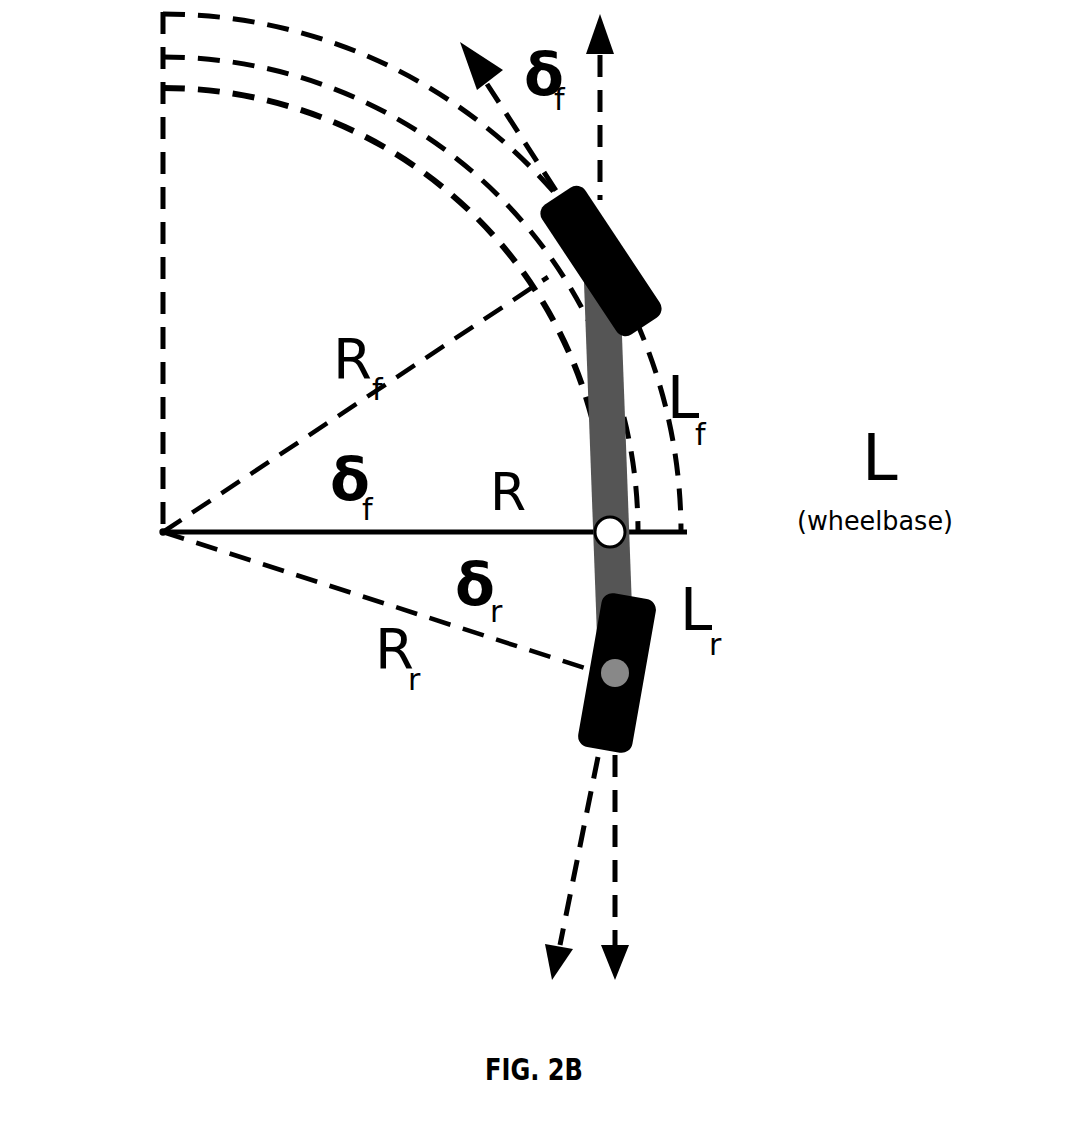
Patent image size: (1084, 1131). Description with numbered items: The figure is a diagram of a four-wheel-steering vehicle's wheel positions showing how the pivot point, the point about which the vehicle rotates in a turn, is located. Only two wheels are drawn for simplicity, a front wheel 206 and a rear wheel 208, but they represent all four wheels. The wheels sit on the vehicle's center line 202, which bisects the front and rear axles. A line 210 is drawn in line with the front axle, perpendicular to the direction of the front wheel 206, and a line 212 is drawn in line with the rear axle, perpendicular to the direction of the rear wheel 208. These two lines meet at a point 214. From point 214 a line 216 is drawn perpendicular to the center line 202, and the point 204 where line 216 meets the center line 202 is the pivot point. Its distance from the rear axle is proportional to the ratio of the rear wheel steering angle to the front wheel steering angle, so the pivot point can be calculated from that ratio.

The center line 202 is at (590, 396).
The pivot point 204 is at (612, 536).
The front wheel 206 is at (660, 303).
The rear wheel 208 is at (630, 722).
The line 210 is at (463, 333).
The line 212 is at (289, 574).
The point 214 is at (163, 532).
The line 216 is at (466, 531).